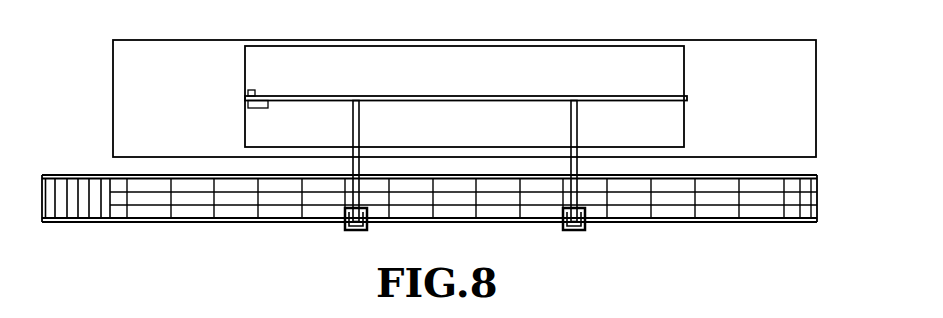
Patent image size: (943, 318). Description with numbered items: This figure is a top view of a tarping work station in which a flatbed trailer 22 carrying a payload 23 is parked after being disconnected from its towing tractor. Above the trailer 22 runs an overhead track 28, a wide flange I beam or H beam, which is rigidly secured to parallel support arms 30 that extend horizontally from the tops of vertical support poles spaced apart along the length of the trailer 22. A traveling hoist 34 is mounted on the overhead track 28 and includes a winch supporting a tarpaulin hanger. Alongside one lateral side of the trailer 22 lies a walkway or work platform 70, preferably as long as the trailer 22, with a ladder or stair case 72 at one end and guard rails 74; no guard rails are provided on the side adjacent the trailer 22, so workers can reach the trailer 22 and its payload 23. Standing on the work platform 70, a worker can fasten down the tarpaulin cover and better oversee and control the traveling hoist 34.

The flatbed trailer 22 is at (199, 63).
The payload 23 is at (665, 76).
The overhead track 28 is at (415, 95).
The support arms 30 is at (352, 125).
The traveling hoist 34 is at (265, 104).
The work platform 70 is at (810, 184).
The stair case 72 is at (80, 175).
The guard rails 74 is at (175, 220).